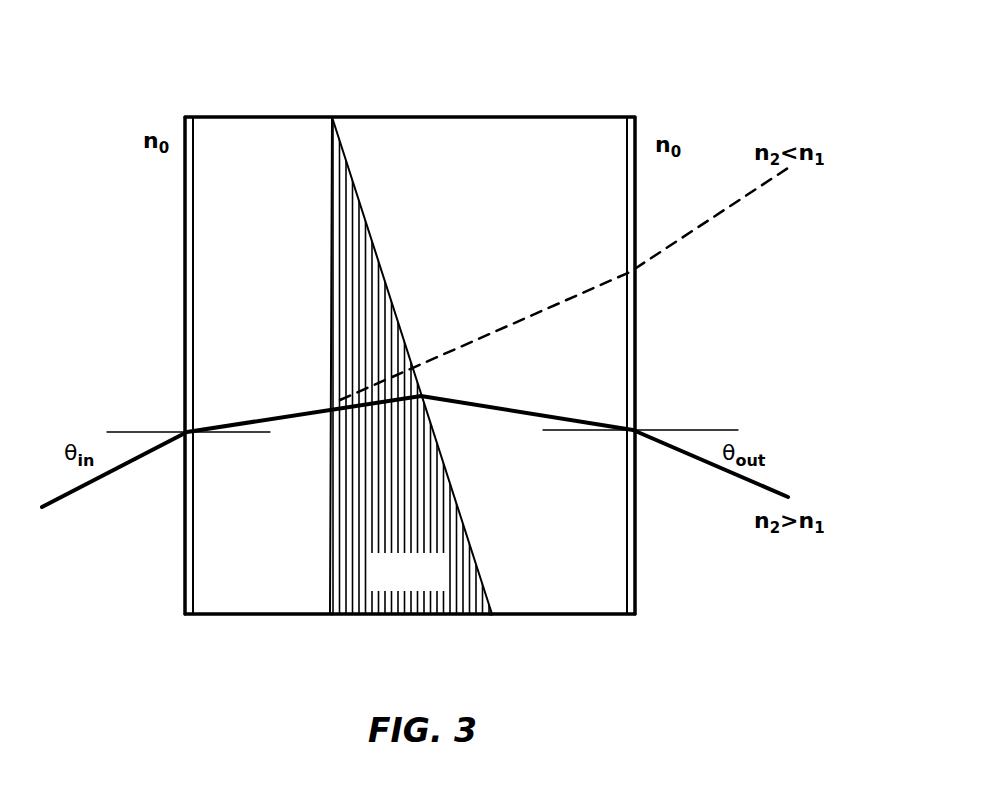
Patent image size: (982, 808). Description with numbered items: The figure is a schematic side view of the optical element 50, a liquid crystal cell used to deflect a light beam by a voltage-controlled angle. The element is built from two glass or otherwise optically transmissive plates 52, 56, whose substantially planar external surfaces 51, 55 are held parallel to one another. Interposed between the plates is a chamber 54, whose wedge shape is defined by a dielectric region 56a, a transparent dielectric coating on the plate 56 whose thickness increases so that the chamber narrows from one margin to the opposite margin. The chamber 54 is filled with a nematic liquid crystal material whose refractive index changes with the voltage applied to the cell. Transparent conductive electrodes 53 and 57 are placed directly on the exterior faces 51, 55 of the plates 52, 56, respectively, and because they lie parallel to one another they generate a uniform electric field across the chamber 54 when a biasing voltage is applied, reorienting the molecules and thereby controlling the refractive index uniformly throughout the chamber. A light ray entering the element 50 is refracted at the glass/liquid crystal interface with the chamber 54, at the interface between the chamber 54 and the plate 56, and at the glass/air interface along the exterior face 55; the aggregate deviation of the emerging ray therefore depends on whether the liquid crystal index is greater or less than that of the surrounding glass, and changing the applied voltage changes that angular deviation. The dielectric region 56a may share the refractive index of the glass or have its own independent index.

The optical element 50 is at (242, 66).
The planar external surface 51 is at (190, 488).
The plate 52 is at (255, 596).
The conductive electrode 53 is at (187, 584).
The chamber 54 is at (458, 596).
The planar external surface 55 is at (626, 487).
The plate 56 is at (565, 596).
The dielectric region 56a is at (423, 152).
The conductive electrode 57 is at (630, 572).